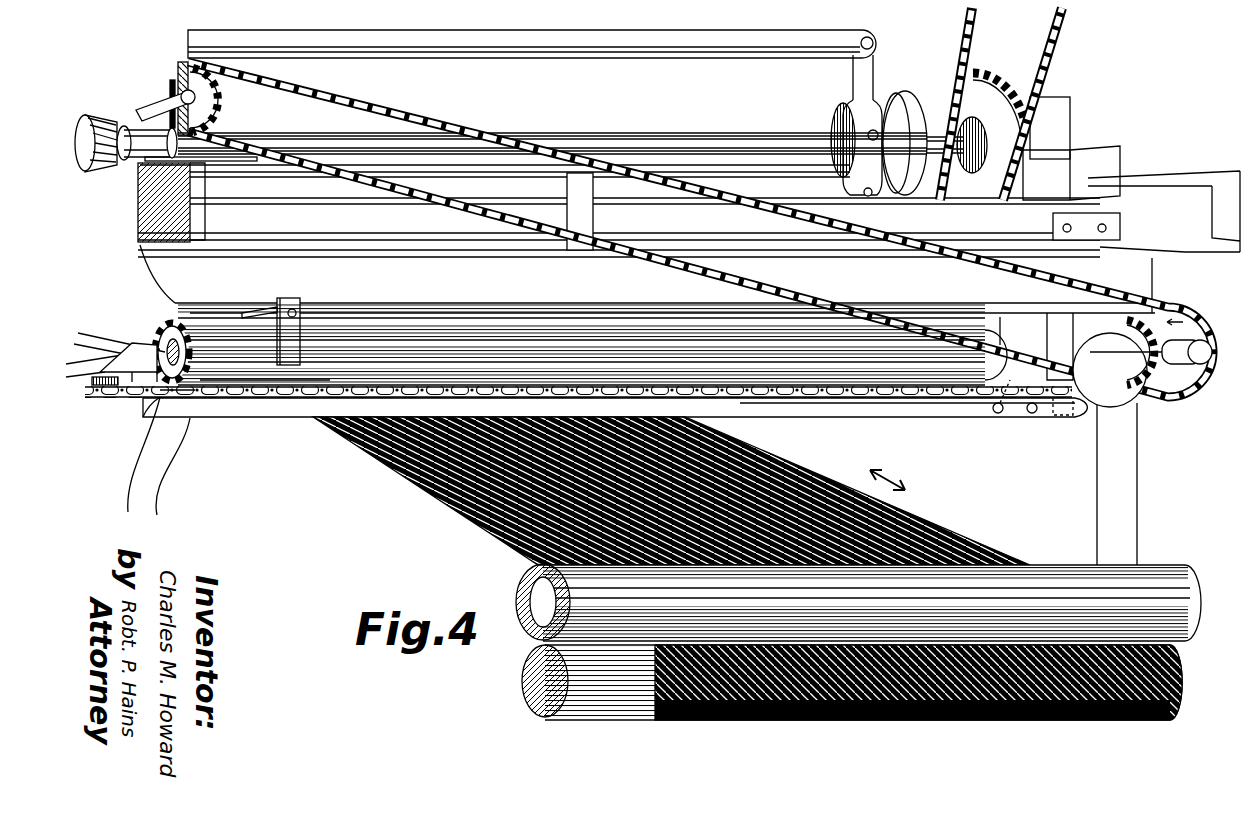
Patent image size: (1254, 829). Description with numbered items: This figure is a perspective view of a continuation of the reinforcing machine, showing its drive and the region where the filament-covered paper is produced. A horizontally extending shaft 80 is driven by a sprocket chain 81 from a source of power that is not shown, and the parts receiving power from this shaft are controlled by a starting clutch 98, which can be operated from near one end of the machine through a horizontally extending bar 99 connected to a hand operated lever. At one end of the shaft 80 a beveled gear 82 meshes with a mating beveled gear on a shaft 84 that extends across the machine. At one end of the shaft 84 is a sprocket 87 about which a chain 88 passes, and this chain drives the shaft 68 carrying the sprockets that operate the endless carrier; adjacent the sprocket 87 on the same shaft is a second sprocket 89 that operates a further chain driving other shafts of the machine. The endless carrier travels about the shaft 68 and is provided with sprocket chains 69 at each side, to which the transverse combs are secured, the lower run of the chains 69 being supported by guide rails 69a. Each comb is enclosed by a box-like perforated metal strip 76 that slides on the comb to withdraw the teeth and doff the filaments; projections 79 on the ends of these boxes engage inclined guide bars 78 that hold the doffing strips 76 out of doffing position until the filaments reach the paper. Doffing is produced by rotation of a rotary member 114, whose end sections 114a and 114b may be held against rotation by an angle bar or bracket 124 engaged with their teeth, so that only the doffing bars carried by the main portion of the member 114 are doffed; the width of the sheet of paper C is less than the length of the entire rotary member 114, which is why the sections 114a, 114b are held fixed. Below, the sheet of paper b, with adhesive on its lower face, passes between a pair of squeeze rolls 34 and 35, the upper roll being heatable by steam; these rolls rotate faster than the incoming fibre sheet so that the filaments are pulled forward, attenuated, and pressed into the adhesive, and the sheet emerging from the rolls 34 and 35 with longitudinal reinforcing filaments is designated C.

The horizontally extending bar 99 is at (482, 36).
The starting clutch 98 is at (905, 100).
The sprocket chain 81 is at (1057, 52).
The horizontally extending shaft 80 is at (767, 132).
The chain 88 is at (465, 130).
The sprocket 87 is at (218, 101).
The second sprocket 89 is at (180, 76).
The shaft 84 is at (153, 110).
The beveled gear 82 is at (102, 114).
The angle bar 124 is at (305, 314).
The rotary member 114 is at (536, 340).
The projection 79 is at (145, 340).
The inclined guide bar 78 is at (92, 345).
The metal strip 76 is at (118, 390).
The sprocket chain 69 is at (890, 404).
The guide rail 69a is at (930, 406).
The section 114a is at (180, 392).
The section 114b is at (268, 378).
The shaft 68 is at (1200, 362).
The sheet C is at (412, 485).
The squeeze roll 35 is at (518, 575).
The squeeze roll 34 is at (525, 703).
The sheet of paper b is at (525, 700).